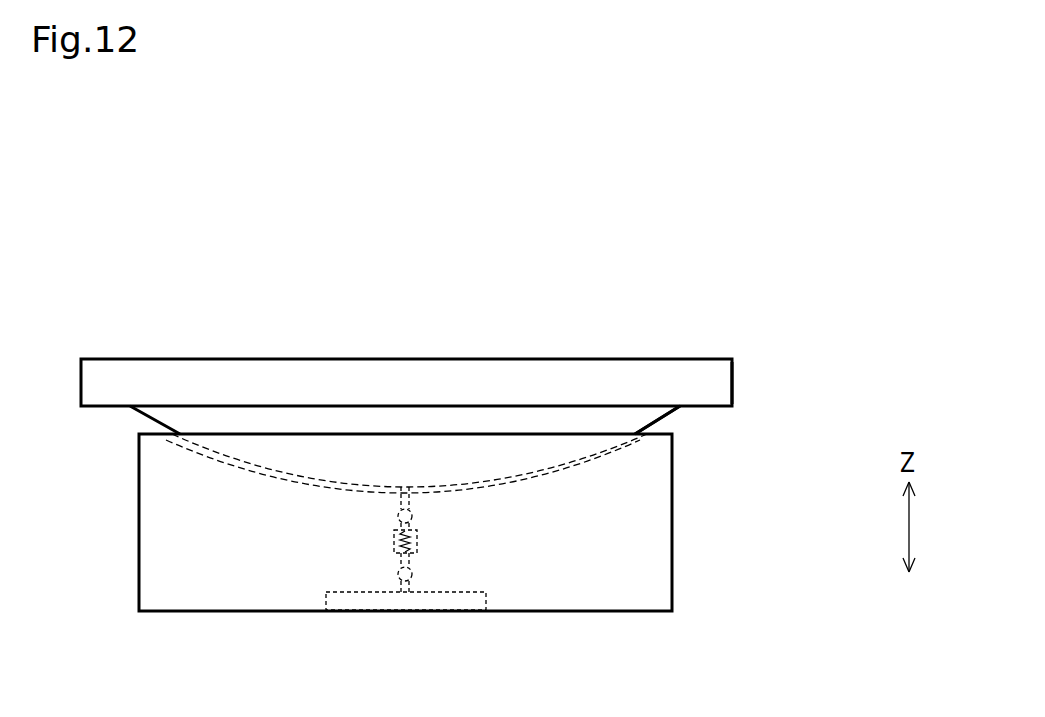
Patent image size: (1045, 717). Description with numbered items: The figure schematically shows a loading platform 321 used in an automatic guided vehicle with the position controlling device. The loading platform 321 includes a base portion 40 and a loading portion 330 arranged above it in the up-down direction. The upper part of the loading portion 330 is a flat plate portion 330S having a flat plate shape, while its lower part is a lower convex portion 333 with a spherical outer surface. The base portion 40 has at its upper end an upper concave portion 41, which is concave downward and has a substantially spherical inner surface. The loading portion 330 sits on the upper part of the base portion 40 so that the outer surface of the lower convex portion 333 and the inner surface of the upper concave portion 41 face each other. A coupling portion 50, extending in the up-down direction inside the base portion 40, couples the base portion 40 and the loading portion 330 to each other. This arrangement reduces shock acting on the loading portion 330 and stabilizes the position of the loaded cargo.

The loading platform 321 is at (618, 297).
The loading portion 330 is at (292, 357).
The flat plate portion 330S is at (733, 381).
The lower convex portion 333 is at (612, 447).
The base portion 40 is at (139, 521).
The upper concave portion 41 is at (233, 447).
The coupling portion 50 is at (421, 541).